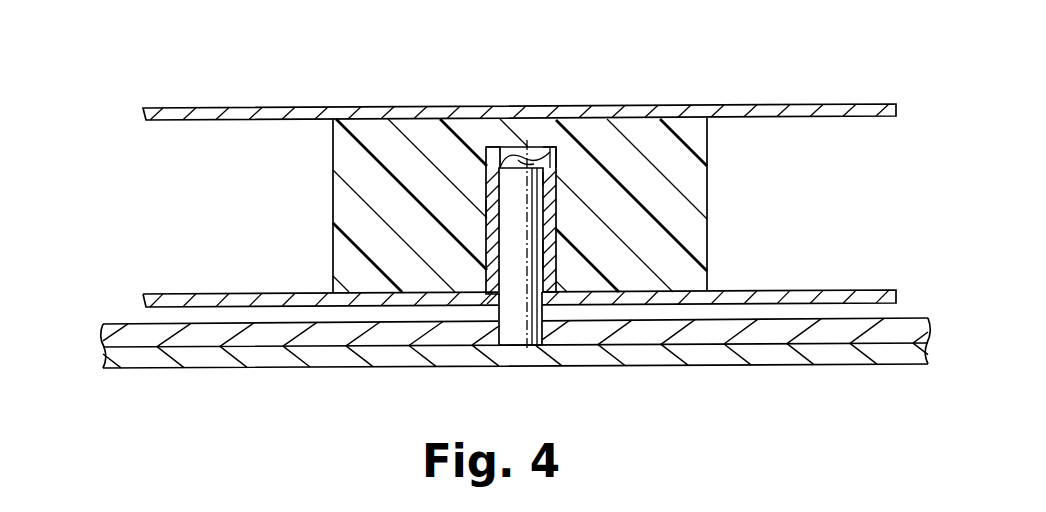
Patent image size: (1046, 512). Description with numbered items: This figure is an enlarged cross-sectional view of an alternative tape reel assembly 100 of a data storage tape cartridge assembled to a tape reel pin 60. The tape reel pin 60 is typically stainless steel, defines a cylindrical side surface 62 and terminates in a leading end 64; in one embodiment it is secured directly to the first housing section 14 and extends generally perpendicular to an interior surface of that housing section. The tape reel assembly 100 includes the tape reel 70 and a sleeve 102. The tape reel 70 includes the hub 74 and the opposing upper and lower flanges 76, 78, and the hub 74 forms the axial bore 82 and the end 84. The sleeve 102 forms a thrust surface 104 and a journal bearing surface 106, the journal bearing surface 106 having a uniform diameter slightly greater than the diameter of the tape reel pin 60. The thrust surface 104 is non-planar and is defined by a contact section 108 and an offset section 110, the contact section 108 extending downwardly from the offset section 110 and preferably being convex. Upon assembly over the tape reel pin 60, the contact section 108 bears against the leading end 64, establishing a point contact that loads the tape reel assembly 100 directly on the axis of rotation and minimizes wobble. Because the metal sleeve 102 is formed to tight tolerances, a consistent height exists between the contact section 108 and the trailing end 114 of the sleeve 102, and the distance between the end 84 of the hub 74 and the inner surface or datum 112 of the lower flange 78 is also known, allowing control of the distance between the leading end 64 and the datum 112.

The tape reel assembly 100 is at (160, 62).
The tape reel 70 is at (236, 215).
The upper flange 76 is at (232, 110).
The hub 74 is at (336, 158).
The end 84 is at (701, 290).
The lower flange 78 is at (202, 300).
The inner surface (datum) 112 is at (258, 296).
The first housing section 14 is at (284, 357).
The cylindrical side surface 62 is at (479, 288).
The leading end 64 is at (508, 162).
The axial bore 82 is at (560, 165).
The trailing end 114 is at (547, 293).
The offset section 110 is at (510, 165).
The thrust surface 104 is at (524, 162).
The contact section 108 is at (550, 186).
The sleeve 102 is at (556, 258).
The journal bearing surface 106 is at (498, 213).
The tape reel pin 60 is at (517, 333).